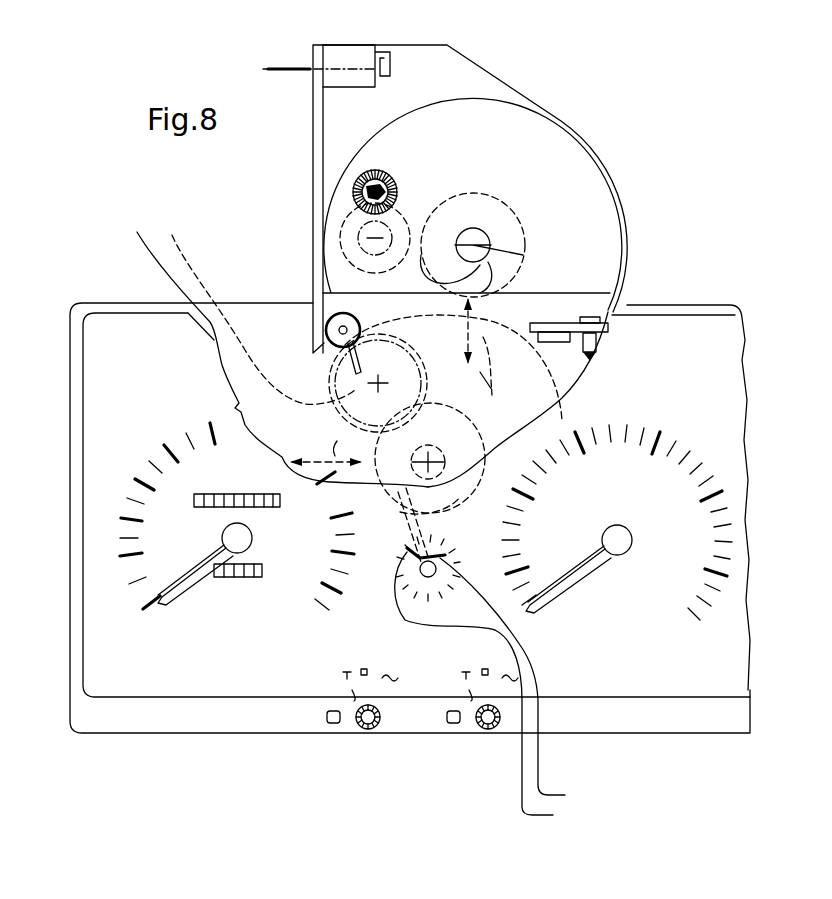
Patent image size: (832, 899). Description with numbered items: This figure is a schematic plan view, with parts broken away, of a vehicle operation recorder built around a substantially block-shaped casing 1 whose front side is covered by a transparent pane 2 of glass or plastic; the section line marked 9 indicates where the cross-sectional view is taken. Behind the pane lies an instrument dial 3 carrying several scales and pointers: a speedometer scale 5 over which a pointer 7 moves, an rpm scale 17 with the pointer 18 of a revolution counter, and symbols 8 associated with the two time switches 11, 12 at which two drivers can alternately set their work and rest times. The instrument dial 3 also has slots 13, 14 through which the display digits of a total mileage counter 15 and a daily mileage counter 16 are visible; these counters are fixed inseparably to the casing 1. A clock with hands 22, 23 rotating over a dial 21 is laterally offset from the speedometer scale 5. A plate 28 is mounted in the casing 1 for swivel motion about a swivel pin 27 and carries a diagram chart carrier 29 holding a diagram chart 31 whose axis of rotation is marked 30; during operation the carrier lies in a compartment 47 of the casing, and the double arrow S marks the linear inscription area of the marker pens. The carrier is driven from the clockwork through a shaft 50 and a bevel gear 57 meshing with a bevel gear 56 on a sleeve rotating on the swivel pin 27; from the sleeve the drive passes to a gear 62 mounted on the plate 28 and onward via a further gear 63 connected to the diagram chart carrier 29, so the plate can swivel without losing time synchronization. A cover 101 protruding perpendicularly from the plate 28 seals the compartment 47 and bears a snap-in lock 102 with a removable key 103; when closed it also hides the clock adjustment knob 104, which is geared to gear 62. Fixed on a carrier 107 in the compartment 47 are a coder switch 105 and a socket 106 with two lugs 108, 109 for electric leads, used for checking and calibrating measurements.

The casing 1 is at (118, 302).
The transparent pane 2 is at (416, 456).
The instrument dial 3 is at (147, 384).
The speedometer scale 5 is at (153, 628).
The pointer 7 is at (212, 559).
The symbols 8 is at (358, 661).
The section line IX-IX 9 is at (62, 374).
The time switch 11 is at (366, 729).
The time switch 12 is at (486, 729).
The slot 13 is at (200, 505).
The slot 14 is at (220, 578).
The total mileage counter 15 is at (218, 485).
The daily mileage counter 16 is at (241, 589).
The rpm scale 17 is at (705, 640).
The pointer 18 is at (585, 572).
The dial 21 is at (485, 589).
The clock hand 22 is at (511, 688).
The clock hand 23 is at (482, 695).
The swivel pin 27 is at (334, 355).
The plate 28 is at (462, 62).
The diagram chart carrier 29 is at (485, 237).
The axis of rotation 30 is at (485, 248).
The diagram chart 31 is at (595, 160).
The compartment 47 is at (518, 325).
The shaft 50 is at (330, 380).
The bevel gear 56 is at (338, 362).
The bevel gear 57 is at (345, 368).
The gear 62 is at (320, 227).
The gear 63 is at (473, 192).
The cover 101 is at (313, 122).
The lock 102 is at (341, 47).
The key 103 is at (281, 67).
The adjustment knob 104 is at (356, 180).
The coder switch 105 is at (565, 322).
The socket 106 is at (598, 312).
The carrier 107 is at (553, 323).
The lug 108 is at (594, 358).
The lug 109 is at (597, 342).